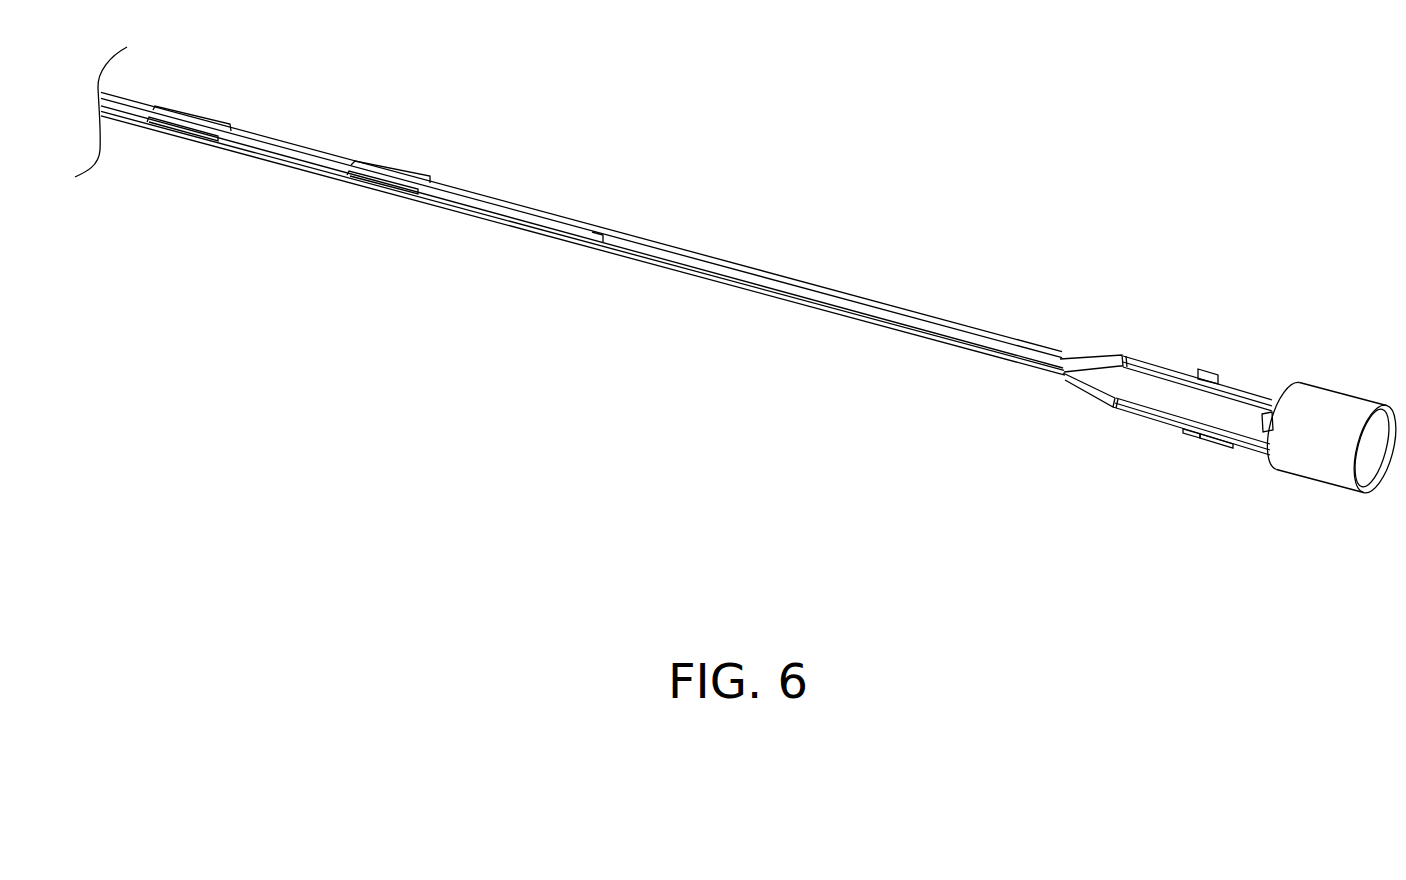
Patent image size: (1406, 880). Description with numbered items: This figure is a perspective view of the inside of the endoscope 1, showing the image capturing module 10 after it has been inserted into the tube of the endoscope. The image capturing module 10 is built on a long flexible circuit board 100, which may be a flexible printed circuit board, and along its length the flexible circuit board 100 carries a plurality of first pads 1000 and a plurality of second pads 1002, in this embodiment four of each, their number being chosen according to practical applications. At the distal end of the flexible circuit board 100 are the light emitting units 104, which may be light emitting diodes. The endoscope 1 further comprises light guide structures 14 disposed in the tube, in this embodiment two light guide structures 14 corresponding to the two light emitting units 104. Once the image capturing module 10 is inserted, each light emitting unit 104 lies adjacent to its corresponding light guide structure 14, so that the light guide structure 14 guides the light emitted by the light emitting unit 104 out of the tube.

The endoscope 1 is at (1003, 78).
The image capturing module 10 is at (760, 226).
The flexible circuit board 100 is at (752, 293).
The first pads 1000 is at (395, 172).
The second pads 1002 is at (380, 184).
The light emitting unit 104 is at (1210, 370).
The light guide structure 14 is at (1263, 380).